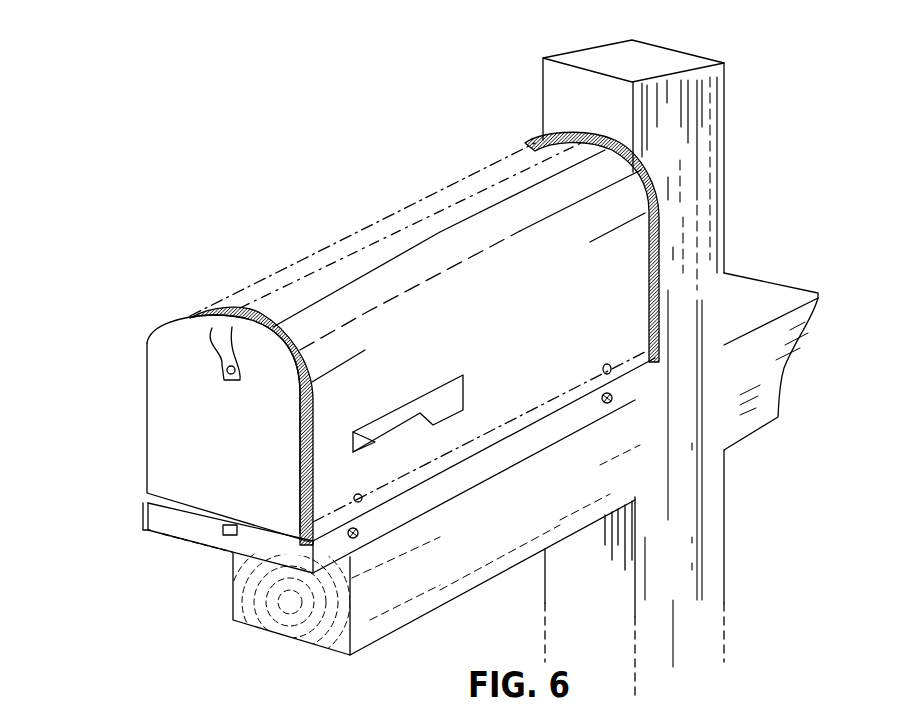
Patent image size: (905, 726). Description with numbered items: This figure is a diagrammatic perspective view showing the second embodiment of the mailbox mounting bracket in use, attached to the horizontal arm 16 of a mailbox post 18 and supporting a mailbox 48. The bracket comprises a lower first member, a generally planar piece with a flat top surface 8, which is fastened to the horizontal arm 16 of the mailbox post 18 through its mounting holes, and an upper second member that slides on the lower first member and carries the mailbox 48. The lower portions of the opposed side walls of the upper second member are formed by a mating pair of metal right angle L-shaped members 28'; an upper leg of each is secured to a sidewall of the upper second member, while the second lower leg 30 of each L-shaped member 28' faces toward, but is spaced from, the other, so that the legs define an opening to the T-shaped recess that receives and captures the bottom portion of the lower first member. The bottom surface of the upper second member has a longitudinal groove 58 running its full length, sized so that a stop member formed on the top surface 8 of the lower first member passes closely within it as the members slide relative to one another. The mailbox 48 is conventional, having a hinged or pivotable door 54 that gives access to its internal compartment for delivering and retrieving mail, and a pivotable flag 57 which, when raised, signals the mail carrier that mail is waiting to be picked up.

The top surface 8 is at (253, 267).
The horizontal arm 16 is at (303, 627).
The mailbox post 18 is at (715, 557).
The right angle L-shaped members 28' is at (447, 479).
The second lower leg 30 is at (170, 535).
The mailbox 48 is at (496, 233).
The door 54 is at (197, 405).
The pivotable flag 57 is at (425, 385).
The longitudinal groove 58 is at (228, 537).